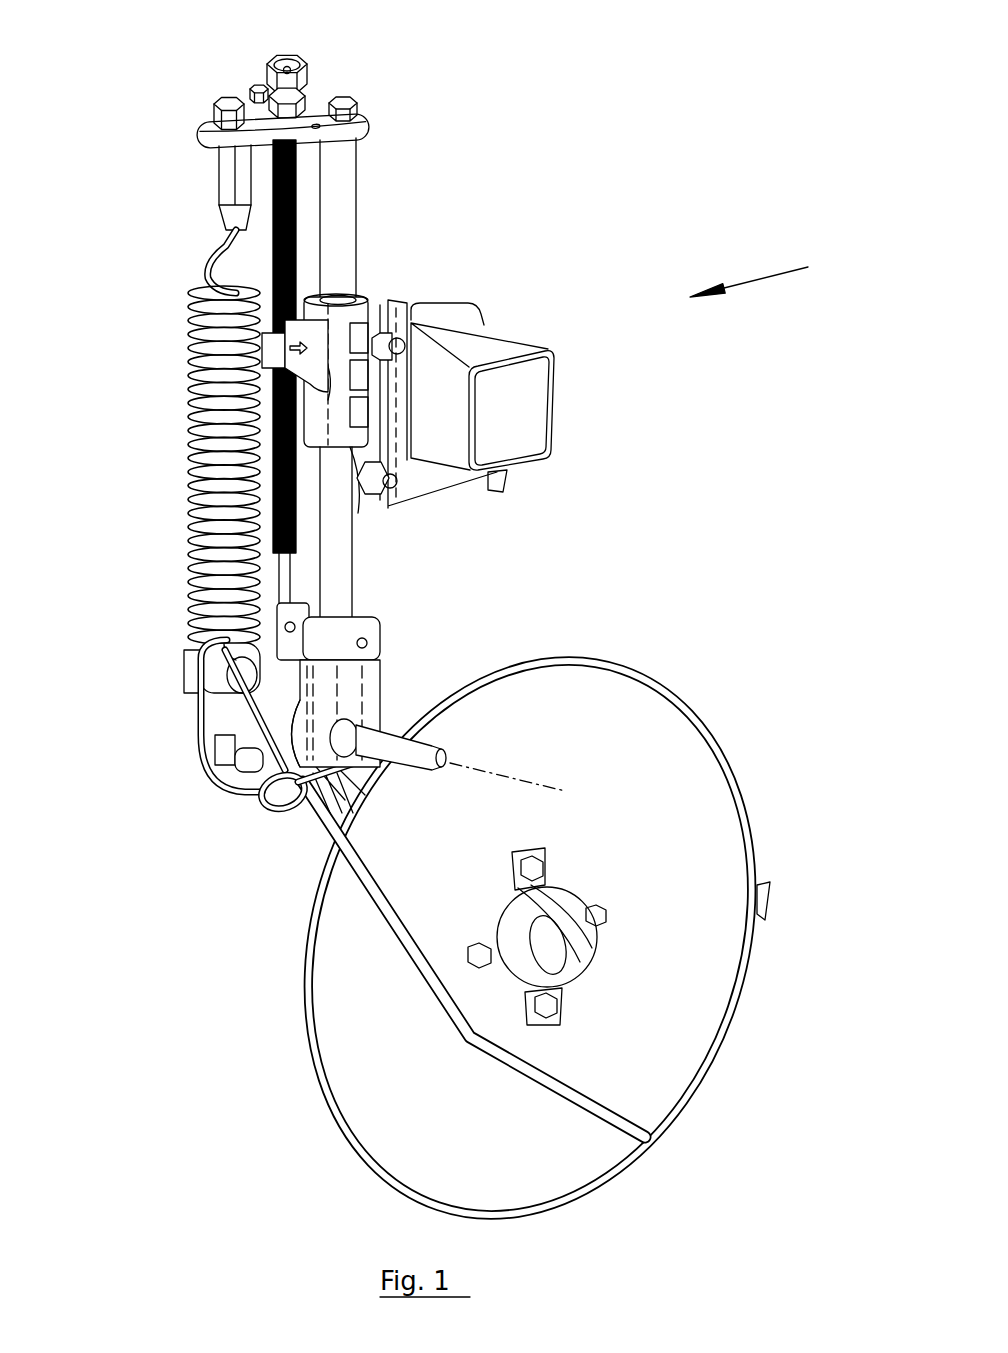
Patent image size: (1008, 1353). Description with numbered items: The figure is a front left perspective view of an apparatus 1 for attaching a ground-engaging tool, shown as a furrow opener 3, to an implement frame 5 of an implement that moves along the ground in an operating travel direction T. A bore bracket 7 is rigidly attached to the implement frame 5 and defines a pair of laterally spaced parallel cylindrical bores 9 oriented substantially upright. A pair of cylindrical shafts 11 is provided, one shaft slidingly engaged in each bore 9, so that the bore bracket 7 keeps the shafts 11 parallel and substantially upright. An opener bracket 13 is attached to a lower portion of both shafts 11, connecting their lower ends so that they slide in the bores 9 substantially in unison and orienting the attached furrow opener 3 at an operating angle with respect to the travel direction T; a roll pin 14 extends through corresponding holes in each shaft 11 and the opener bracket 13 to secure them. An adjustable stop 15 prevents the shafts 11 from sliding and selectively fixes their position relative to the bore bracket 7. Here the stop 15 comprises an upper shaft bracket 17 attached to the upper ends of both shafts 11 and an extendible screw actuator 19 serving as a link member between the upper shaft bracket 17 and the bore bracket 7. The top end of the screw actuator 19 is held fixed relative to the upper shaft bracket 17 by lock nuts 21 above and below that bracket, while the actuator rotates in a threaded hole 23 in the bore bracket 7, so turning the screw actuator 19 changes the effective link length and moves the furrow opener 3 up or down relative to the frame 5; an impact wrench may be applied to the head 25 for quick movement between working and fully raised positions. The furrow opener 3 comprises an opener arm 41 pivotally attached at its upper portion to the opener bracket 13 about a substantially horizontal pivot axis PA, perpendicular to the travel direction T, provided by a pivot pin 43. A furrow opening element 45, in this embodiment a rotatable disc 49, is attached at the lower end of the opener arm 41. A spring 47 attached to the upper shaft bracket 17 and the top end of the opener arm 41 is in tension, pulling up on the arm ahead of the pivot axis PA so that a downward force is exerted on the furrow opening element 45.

The apparatus 1 is at (490, 212).
The furrow opener 3 is at (263, 885).
The implement frame 5 is at (558, 402).
The bore bracket 7 is at (360, 530).
The cylindrical bores 9 is at (373, 285).
The cylindrical shafts 11 is at (360, 177).
The opener bracket 13 is at (380, 658).
The roll pin 14 is at (372, 618).
The adjustable stop 15 is at (273, 213).
The upper shaft bracket 17 is at (363, 115).
The extendible screw actuator 19 is at (266, 463).
The lock nuts 21 is at (310, 92).
The threaded hole 23 is at (266, 428).
The head 25 is at (263, 78).
The opener arm 41 is at (213, 790).
The pivot pin 43 is at (445, 745).
The furrow opening element 45 is at (690, 700).
The spring 47 is at (188, 550).
The rotatable disc 49 is at (720, 1050).
The operating travel direction T is at (768, 274).
The pivot axis PA is at (523, 785).